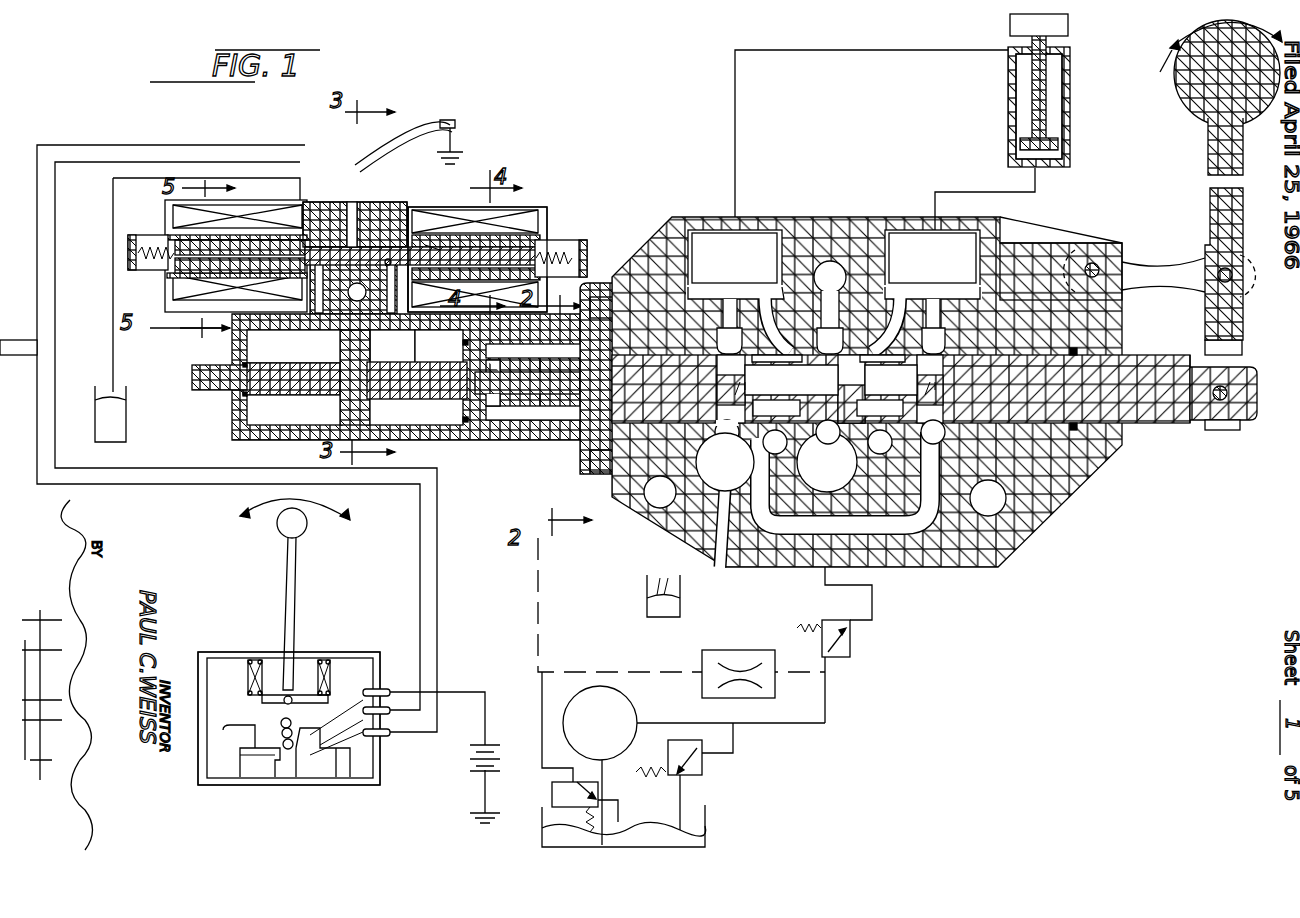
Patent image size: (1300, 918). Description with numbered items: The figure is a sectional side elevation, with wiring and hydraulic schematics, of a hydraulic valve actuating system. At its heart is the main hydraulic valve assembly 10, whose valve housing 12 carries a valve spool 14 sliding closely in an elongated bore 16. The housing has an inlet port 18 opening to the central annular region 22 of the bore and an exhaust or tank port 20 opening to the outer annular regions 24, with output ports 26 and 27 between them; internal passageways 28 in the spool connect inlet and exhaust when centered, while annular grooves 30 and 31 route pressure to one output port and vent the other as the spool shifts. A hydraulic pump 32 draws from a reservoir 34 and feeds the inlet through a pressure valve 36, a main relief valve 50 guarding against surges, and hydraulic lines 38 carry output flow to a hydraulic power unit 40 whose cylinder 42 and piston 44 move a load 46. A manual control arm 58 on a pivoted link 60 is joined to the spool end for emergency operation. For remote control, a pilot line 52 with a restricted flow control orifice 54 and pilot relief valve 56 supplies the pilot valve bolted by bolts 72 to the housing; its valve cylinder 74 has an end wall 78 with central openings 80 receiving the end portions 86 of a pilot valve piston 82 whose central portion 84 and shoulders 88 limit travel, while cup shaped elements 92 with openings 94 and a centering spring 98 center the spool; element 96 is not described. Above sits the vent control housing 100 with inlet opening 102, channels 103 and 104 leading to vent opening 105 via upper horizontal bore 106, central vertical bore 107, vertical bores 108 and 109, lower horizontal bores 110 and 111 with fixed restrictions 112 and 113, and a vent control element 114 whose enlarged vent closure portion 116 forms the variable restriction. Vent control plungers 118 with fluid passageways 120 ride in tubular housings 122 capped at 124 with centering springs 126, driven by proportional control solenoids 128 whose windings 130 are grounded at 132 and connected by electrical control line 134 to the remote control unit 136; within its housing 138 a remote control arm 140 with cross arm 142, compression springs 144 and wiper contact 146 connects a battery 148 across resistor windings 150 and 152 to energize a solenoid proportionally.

The main hydraulic valve assembly 10 is at (1000, 572).
The valve housing 12 is at (1038, 510).
The valve spool 14 is at (1142, 440).
The elongated bore 16 is at (1010, 296).
The inlet port 18 is at (880, 490).
The exhaust or tank port 20 is at (718, 500).
The central annular region 22 is at (830, 262).
The annular region 24 is at (728, 328).
The output port 26 is at (710, 230).
The output port 27 is at (902, 230).
The internal passageways 28 is at (745, 450).
The annular groove 30 is at (762, 299).
The annular groove 31 is at (904, 300).
The hydraulic pump 32 is at (622, 708).
The reservoir 34 is at (650, 585).
The pressure valve 36 is at (848, 650).
The hydraulic lines 38 is at (735, 152).
The hydraulic power unit 40 is at (990, 92).
The cylinder 42 is at (1012, 124).
The piston 44 is at (1062, 134).
The load or utilization means 46 is at (1068, 26).
The main relief valve 50 is at (702, 772).
The pilot line 52 is at (540, 590).
The restricted flow control orifice 54 is at (738, 654).
The pilot relief valve 56 is at (552, 796).
The manual control arm 58 is at (1243, 222).
The pivoted link 60 is at (1152, 262).
The bolts 72 is at (612, 472).
The valve cylinder 74 is at (232, 425).
The end wall 78 is at (410, 364).
The central openings 80 is at (238, 362).
The pilot valve piston 82 is at (296, 396).
The central portion 84 is at (415, 411).
The end portions 86 is at (478, 370).
The shoulder 88 is at (262, 396).
The cup shaped elements 92 is at (485, 410).
The openings 94 is at (478, 422).
The end member 96 is at (585, 462).
The centering spring 98 is at (515, 420).
The vent control housing 100 is at (350, 202).
The inlet opening 102 is at (352, 300).
The channel 103 is at (302, 245).
The channel 104 is at (478, 218).
The vent opening 105 is at (352, 232).
The upper horizontal bore 106 is at (425, 222).
The central vertical bore 107 is at (367, 205).
The vertical bore 108 is at (167, 323).
The vertical bore 109 is at (440, 248).
The lower horizontal bore 110 is at (335, 250).
The lower horizontal bore 111 is at (392, 346).
The fixed restriction 112 is at (294, 346).
The fixed restriction 113 is at (439, 346).
The vent control element 114 is at (473, 137).
The enlarged vent closure portion 116 is at (390, 260).
The vent control plungers 118 is at (180, 280).
The fluid passageways 120 is at (173, 228).
The tubular housings 122 is at (170, 240).
The cap 124 is at (128, 250).
The centering springs 126 is at (138, 262).
The proportional control solenoids 128 is at (170, 200).
The windings 130 is at (245, 213).
The ground connection 132 is at (452, 122).
The electrical control line 134 is at (437, 615).
The remote control unit 136 is at (216, 652).
The housing 138 is at (199, 775).
The remote control arm 140 is at (298, 580).
The cross arm 142 is at (260, 702).
The compression springs 144 is at (316, 672).
The wiper contact 146 is at (290, 748).
The battery 148 is at (478, 765).
The resistor winding 150 is at (268, 740).
The resistor winding 152 is at (310, 742).